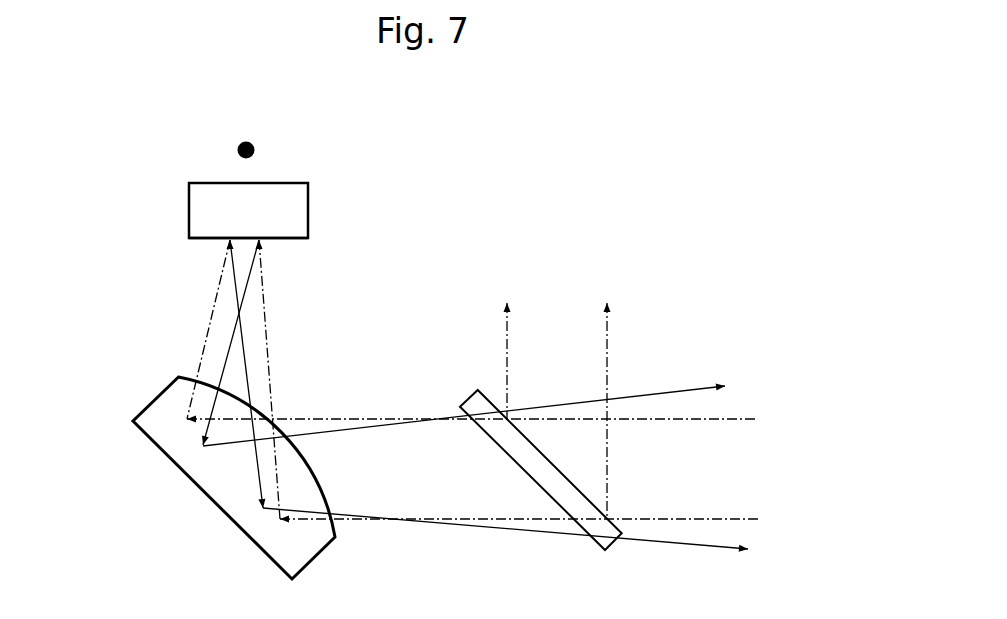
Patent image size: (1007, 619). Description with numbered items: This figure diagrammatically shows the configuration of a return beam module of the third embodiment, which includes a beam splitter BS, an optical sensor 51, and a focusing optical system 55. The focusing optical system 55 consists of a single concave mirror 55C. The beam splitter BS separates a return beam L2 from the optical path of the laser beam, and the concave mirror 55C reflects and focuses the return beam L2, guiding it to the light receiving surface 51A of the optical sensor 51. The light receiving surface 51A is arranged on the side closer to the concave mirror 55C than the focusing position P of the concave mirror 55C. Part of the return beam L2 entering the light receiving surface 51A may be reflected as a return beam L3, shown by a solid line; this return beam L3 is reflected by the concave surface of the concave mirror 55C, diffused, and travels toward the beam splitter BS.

The focusing position P is at (255, 147).
The optical sensor 51 is at (308, 212).
The light receiving surface 51A is at (293, 238).
The focusing optical system 55 is at (133, 350).
The concave mirror 55C is at (208, 485).
The beam splitter BS is at (472, 392).
The return beam L2 is at (667, 520).
The return beam L3 is at (243, 347).